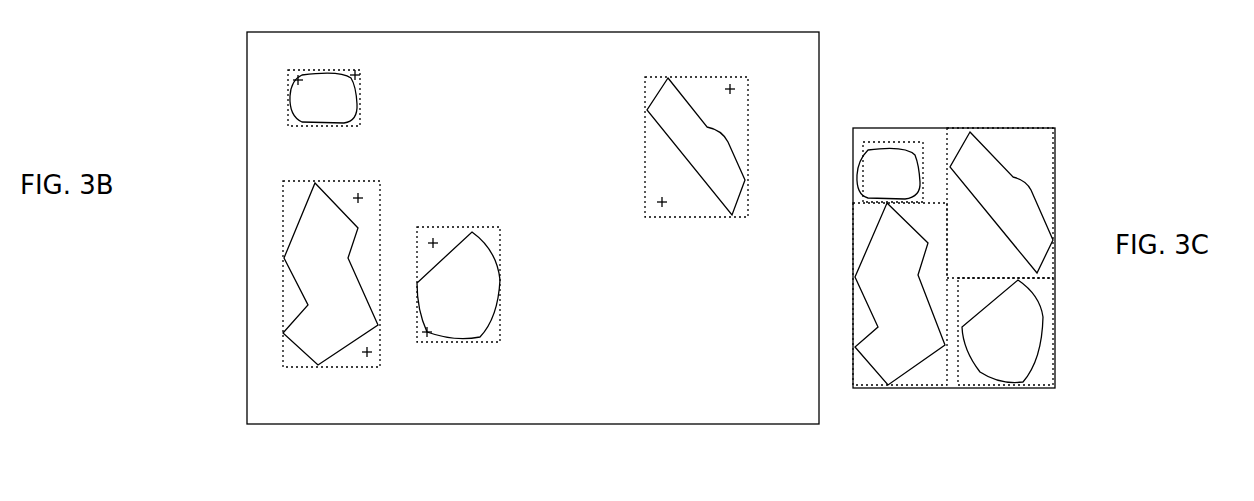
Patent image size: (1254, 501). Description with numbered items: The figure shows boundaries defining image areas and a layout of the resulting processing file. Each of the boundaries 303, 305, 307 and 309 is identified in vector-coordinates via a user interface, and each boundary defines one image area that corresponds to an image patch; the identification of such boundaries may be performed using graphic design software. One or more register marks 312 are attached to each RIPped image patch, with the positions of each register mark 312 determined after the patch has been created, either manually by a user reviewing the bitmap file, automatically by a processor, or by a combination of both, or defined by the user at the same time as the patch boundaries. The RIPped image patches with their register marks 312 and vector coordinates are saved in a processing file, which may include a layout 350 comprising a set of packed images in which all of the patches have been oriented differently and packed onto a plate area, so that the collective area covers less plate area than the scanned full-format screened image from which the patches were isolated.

In FIG. 3B, the boundary 303 is at (357, 117).
In FIG. 3B, the boundary 305 is at (283, 202).
In FIG. 3B, the boundary 307 is at (665, 218).
In FIG. 3B, the boundary 309 is at (502, 238).
In FIG. 3B, the register mark 312 is at (298, 80).
In FIG. 3C, the layout 350 is at (938, 137).